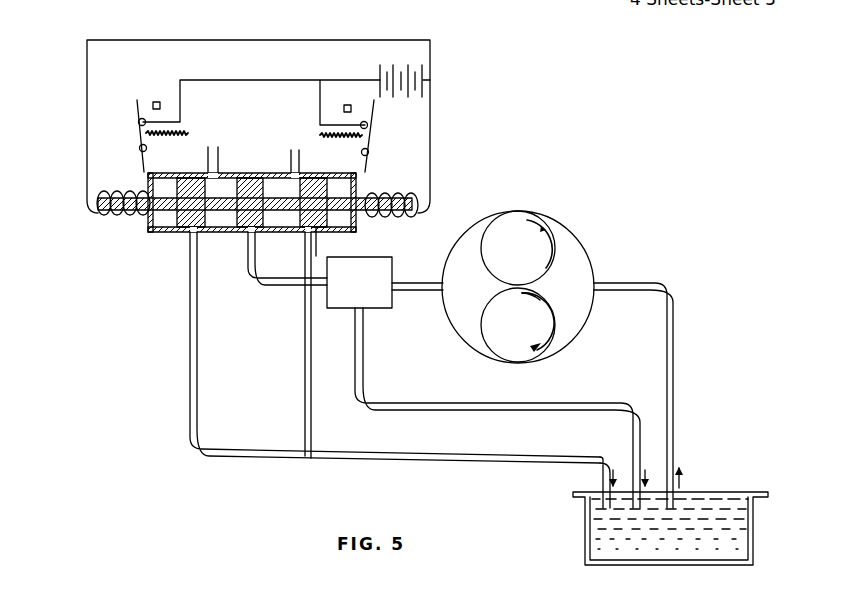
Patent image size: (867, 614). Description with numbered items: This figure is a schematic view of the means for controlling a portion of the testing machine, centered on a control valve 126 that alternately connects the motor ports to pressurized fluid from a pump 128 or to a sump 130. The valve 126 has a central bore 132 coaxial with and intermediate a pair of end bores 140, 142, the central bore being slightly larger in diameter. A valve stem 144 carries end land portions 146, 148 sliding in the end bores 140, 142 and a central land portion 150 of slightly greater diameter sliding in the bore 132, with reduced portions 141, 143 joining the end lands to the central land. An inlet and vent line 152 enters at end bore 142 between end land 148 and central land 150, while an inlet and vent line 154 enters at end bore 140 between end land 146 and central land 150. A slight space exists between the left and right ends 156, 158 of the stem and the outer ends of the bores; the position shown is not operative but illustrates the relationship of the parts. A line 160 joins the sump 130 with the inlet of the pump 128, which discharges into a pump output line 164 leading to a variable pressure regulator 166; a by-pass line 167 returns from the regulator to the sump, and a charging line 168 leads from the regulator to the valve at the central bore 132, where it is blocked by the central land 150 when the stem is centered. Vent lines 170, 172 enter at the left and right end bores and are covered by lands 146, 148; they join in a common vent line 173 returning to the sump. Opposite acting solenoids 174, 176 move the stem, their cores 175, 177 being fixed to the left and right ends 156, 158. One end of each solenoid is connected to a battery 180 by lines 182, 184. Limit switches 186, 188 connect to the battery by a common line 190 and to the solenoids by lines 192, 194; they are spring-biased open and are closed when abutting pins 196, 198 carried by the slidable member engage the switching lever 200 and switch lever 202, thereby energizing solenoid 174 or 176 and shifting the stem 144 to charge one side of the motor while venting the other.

The control valve 126 is at (152, 236).
The pump 128 is at (556, 228).
The sump 130 is at (755, 492).
The central bore 132 is at (224, 178).
The end bore 140 is at (225, 225).
The reduced portion 141 is at (190, 233).
The end bore 142 is at (286, 226).
The reduced portion 143 is at (318, 233).
The valve stem 144 is at (232, 231).
The end land portion 146 is at (190, 178).
The end land portion 148 is at (318, 180).
The central land portion 150 is at (291, 162).
The inlet and vent line 152 is at (300, 176).
The inlet and vent line 154 is at (216, 156).
The left end 156 is at (178, 217).
The right end 158 is at (344, 192).
The line 160 is at (673, 372).
The pump output line 164 is at (413, 292).
The variable pressure regulator 166 is at (359, 282).
The by-pass line 167 is at (364, 388).
The charging line 168 is at (288, 286).
The vent line 170 is at (190, 354).
The vent line 172 is at (305, 355).
The common vent line 173 is at (390, 458).
The solenoid 174 is at (80, 184).
The core 175 is at (98, 212).
The solenoid 176 is at (434, 187).
The core 177 is at (404, 214).
The battery 180 is at (379, 68).
The line 182 is at (218, 38).
The line 184 is at (430, 126).
The limit switch 186 is at (186, 131).
The limit switch 188 is at (317, 136).
The common line 190 is at (238, 80).
The line 192 is at (140, 162).
The line 194 is at (368, 160).
The abutting pin 196 is at (153, 100).
The abutting pin 198 is at (356, 86).
The switching lever 200 is at (138, 107).
The switch lever 202 is at (373, 108).